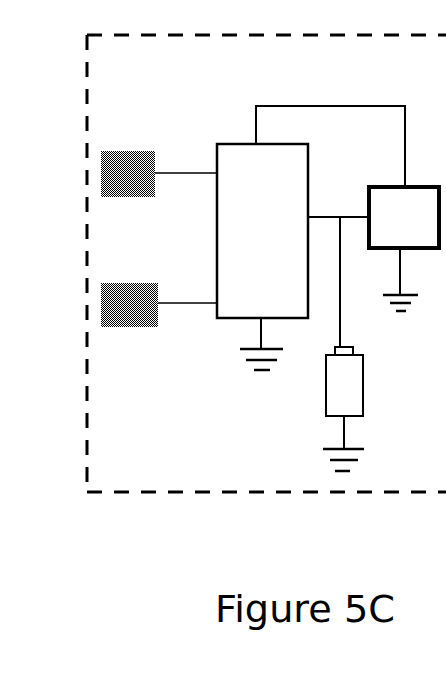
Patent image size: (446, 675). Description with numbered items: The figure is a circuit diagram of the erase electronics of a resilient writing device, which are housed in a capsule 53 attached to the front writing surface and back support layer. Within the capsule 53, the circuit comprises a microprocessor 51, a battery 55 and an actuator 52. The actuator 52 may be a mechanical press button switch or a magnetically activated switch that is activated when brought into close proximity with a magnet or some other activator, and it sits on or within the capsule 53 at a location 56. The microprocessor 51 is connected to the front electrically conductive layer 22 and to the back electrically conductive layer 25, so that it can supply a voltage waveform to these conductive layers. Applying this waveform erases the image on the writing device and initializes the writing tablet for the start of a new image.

The front electrically conductive layer 22 is at (100, 182).
The back electrically conductive layer 25 is at (101, 316).
The microprocessor 51 is at (262, 257).
The actuator 52 is at (347, 208).
The capsule 53 is at (223, 269).
The battery 55 is at (326, 387).
The location 56 is at (0, 63).